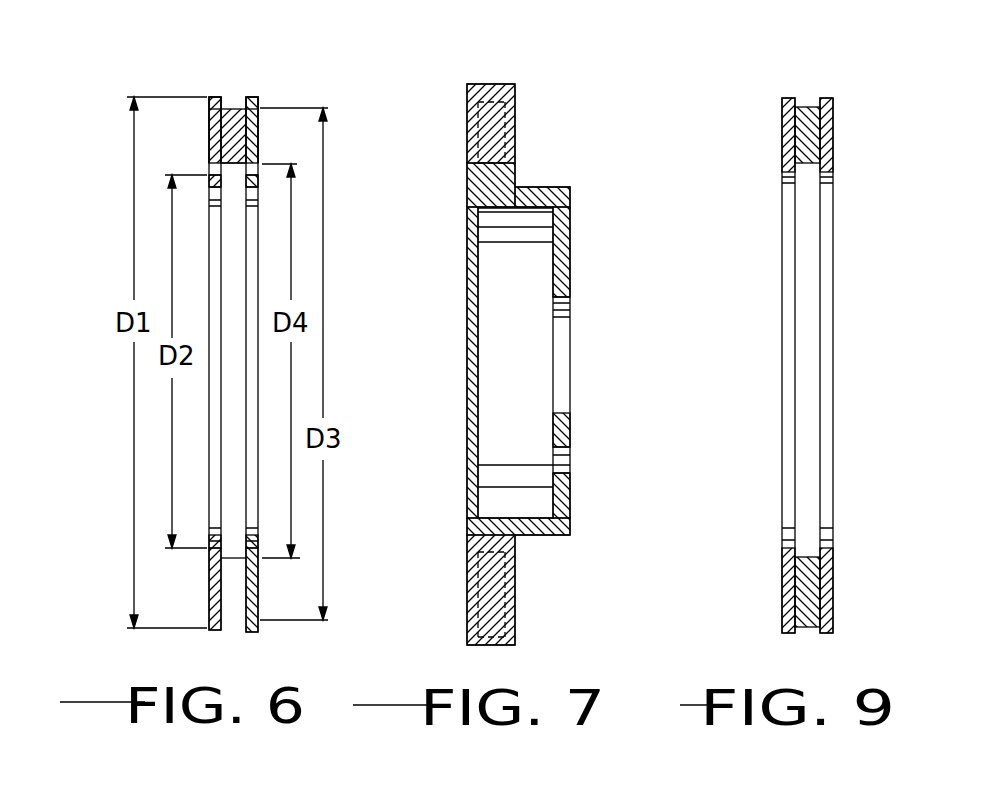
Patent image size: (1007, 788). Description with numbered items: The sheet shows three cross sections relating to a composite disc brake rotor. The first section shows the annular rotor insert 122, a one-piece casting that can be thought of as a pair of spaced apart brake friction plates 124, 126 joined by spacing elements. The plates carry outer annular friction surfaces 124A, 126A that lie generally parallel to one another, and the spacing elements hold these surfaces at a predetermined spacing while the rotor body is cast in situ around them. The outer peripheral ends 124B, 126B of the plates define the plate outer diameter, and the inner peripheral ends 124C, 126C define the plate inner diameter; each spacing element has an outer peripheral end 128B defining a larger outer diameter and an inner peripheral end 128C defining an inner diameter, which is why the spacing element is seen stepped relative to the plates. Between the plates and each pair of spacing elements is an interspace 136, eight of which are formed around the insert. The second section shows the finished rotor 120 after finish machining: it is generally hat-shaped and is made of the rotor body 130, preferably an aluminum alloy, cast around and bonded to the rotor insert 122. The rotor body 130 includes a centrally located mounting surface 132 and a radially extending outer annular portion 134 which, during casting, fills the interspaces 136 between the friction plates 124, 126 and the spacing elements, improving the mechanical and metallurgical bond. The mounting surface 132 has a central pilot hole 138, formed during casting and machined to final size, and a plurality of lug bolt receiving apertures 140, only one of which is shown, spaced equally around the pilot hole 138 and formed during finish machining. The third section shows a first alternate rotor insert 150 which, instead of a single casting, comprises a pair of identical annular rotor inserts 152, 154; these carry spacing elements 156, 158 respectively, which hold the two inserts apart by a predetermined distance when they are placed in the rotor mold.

In FIG. 7, the finished rotor 120 is at (546, 103).
In FIG. 6, the annular rotor insert 122 is at (200, 457).
In FIG. 6, the brake friction plate 124 is at (207, 590).
In FIG. 7, the brake friction plate 124 is at (468, 596).
In FIG. 6, the outer annular friction surface 124A is at (209, 137).
In FIG. 6, the outer peripheral end 124B is at (213, 97).
In FIG. 6, the inner peripheral end 124C is at (212, 178).
In FIG. 6, the brake friction plate 126 is at (258, 588).
In FIG. 7, the brake friction plate 126 is at (518, 597).
In FIG. 6, the outer annular friction surface 126A is at (258, 137).
In FIG. 6, the outer peripheral end 126B is at (250, 97).
In FIG. 6, the inner peripheral end 126C is at (258, 185).
In FIG. 6, the outer peripheral end of spacing element 128B is at (228, 108).
In FIG. 6, the inner peripheral end of spacing element 128C is at (233, 163).
In FIG. 7, the rotor body 130 is at (551, 181).
In FIG. 7, the mounting surface 132 is at (575, 272).
In FIG. 7, the outer annular portion 134 is at (517, 538).
In FIG. 6, the interspace 136 is at (235, 613).
In FIG. 7, the pilot hole 138 is at (562, 303).
In FIG. 7, the lug bolt receiving aperture 140 is at (570, 458).
In FIG. 9, the rotor insert 150 is at (850, 268).
In FIG. 9, the annular rotor insert 152 is at (782, 118).
In FIG. 9, the annular rotor insert 154 is at (833, 148).
In FIG. 9, the spacing element 156 is at (805, 555).
In FIG. 9, the spacing element 158 is at (803, 107).